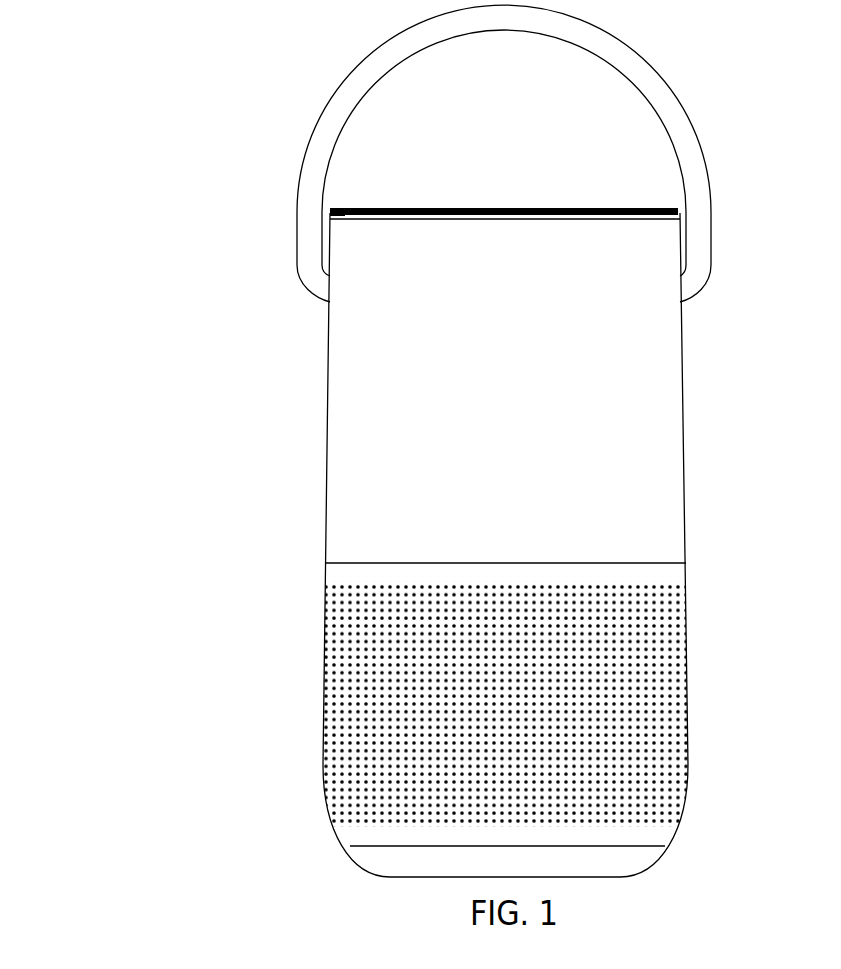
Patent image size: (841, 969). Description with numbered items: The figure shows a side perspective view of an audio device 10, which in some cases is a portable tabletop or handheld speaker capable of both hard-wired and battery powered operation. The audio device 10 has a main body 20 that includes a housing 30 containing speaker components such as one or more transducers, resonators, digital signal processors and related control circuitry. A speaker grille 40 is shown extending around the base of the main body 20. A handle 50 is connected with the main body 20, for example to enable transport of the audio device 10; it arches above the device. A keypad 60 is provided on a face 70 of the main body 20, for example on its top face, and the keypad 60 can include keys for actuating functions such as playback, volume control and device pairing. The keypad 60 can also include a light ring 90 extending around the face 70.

The audio device 10 is at (143, 130).
The main body 20 is at (268, 413).
The housing 30 is at (695, 390).
The speaker grille 40 is at (700, 657).
The handle 50 is at (670, 65).
The keypad 60 is at (502, 197).
The face 70 is at (548, 150).
The light ring 90 is at (427, 214).